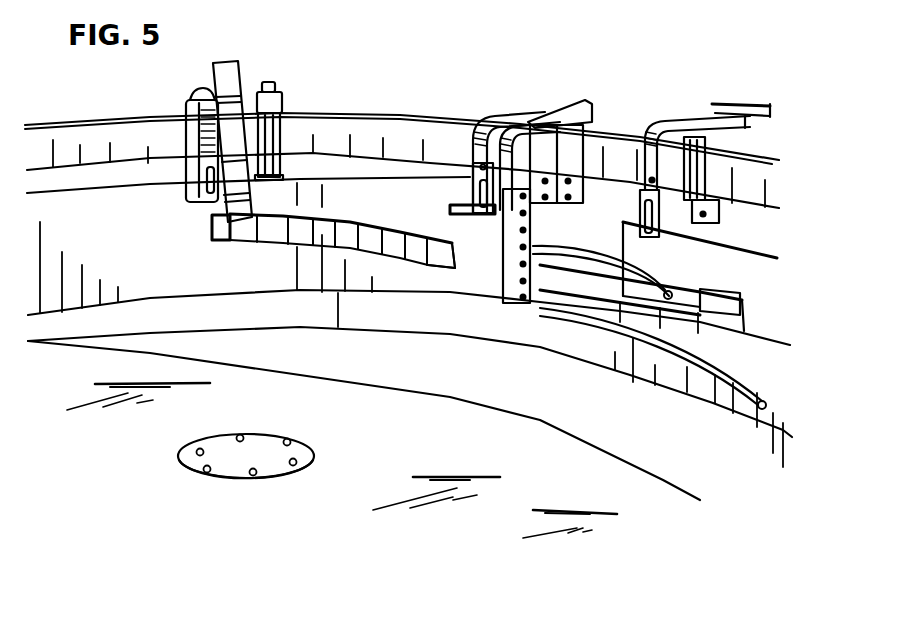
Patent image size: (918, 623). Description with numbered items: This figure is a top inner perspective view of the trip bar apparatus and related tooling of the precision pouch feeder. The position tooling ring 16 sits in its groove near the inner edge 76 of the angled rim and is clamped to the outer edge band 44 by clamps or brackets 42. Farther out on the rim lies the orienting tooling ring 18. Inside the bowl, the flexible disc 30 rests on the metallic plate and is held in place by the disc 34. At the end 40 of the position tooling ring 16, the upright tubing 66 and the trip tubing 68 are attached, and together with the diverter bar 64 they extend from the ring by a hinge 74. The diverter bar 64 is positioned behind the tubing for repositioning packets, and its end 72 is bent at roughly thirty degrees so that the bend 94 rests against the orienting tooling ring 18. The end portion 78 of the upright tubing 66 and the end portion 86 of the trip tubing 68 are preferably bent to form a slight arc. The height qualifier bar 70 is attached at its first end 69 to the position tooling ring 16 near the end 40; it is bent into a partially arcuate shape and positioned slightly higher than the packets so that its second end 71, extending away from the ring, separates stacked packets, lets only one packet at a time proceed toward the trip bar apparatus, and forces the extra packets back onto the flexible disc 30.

The position tooling ring 16 is at (65, 205).
The orienting tooling ring 18 is at (714, 243).
The flexible disc 30 is at (291, 409).
The disc 34 is at (300, 445).
The end of position tooling ring 40 is at (475, 287).
The clamps or brackets 42 is at (240, 78).
The outer edge band 44 is at (352, 122).
The diverter bar 64 is at (708, 291).
The upright tubing 66 is at (573, 250).
The trip tubing 68 is at (757, 381).
The first end of height qualifier bar 69 is at (250, 240).
The height qualifier bar 70 is at (343, 217).
The second end of height qualifier bar 71 is at (448, 262).
The end of diverter bar 72 is at (740, 304).
The hinge 74 is at (529, 303).
The inner edge 76 is at (250, 317).
The end portion of upright tubing 78 is at (655, 290).
The end portion of trip tubing 86 is at (768, 406).
The bend 94 is at (722, 293).